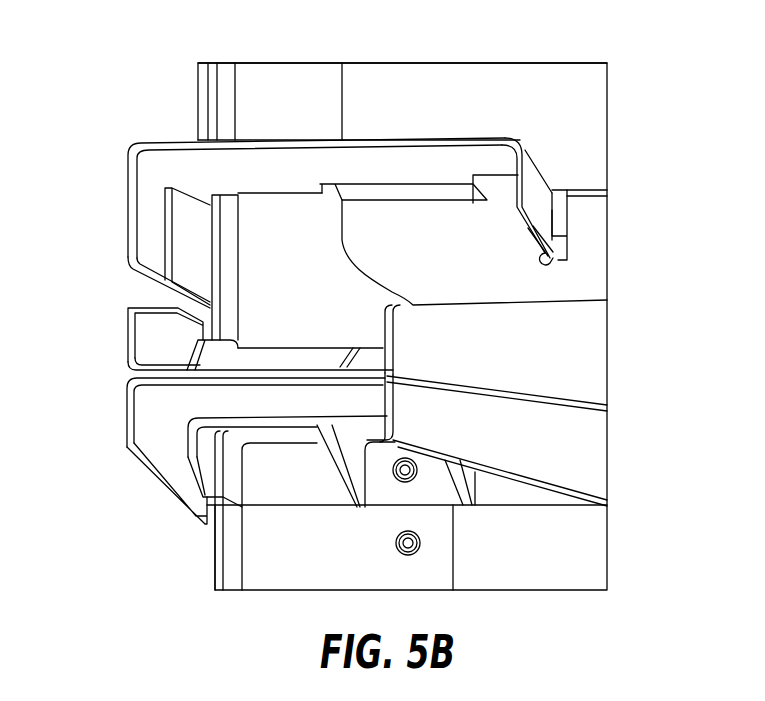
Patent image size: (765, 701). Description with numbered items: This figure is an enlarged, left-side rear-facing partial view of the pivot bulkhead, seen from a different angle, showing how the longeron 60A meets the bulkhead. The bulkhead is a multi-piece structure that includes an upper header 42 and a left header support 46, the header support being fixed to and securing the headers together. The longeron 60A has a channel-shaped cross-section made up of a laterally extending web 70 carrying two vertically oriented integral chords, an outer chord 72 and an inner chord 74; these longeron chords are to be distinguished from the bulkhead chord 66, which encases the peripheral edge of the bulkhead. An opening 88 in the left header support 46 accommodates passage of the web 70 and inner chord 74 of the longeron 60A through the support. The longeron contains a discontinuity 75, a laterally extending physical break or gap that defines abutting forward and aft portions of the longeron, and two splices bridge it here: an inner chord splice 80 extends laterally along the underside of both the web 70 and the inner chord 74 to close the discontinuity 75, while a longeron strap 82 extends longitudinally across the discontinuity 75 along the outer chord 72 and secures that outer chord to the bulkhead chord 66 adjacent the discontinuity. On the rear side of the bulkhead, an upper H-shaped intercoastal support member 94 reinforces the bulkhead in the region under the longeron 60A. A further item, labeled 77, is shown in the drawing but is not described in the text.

The upper header 42 is at (389, 110).
The left header support 46 is at (419, 249).
The longeron 60A is at (432, 115).
The bulkhead chord 66 is at (204, 99).
The web 70 is at (486, 137).
The outer chord 72 is at (128, 205).
The inner chord 74 is at (542, 212).
The longeron discontinuity 75 is at (553, 236).
The flange 77 is at (577, 192).
The inner chord splice 80 is at (503, 200).
The longeron strap 82 is at (188, 256).
The opening 88 is at (556, 265).
The upper H-shaped intercoastal support member 94 is at (127, 425).